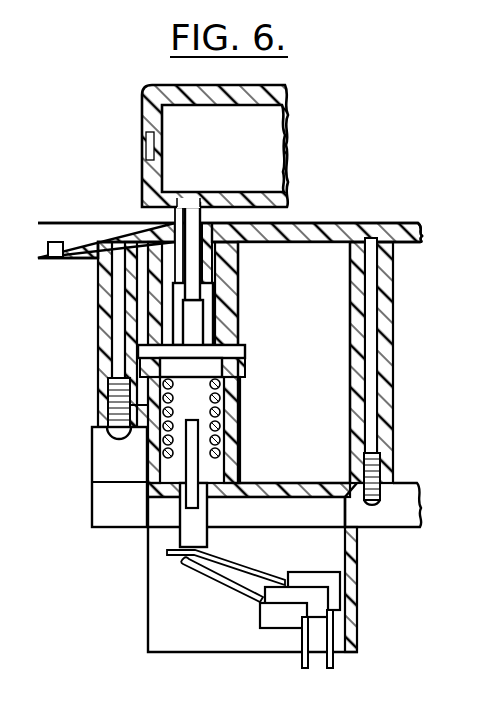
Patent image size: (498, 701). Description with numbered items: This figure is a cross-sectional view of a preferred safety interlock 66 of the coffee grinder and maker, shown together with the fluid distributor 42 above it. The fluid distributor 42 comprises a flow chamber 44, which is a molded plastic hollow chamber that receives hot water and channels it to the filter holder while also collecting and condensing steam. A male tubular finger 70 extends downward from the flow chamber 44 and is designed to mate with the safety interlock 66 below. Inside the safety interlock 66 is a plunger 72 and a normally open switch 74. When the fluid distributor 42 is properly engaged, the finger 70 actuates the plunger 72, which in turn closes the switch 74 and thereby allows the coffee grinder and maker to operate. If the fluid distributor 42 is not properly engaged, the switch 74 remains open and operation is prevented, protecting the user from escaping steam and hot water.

The fluid distributor 42 is at (175, 135).
The flow chamber 44 is at (242, 146).
The safety interlock 66 is at (307, 366).
The male tubular finger 70 is at (186, 213).
The plunger 72 is at (192, 459).
The normally open switch 74 is at (282, 593).